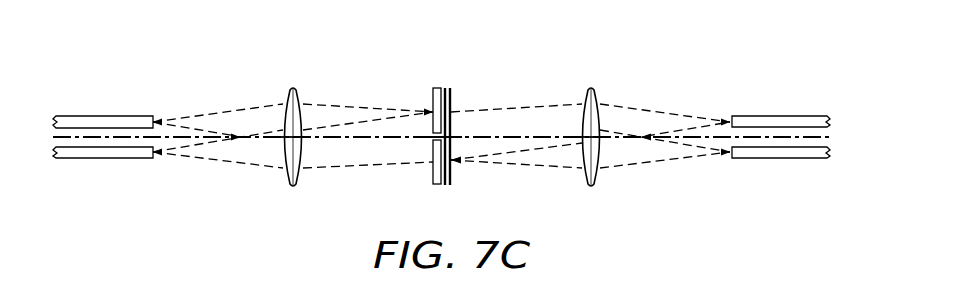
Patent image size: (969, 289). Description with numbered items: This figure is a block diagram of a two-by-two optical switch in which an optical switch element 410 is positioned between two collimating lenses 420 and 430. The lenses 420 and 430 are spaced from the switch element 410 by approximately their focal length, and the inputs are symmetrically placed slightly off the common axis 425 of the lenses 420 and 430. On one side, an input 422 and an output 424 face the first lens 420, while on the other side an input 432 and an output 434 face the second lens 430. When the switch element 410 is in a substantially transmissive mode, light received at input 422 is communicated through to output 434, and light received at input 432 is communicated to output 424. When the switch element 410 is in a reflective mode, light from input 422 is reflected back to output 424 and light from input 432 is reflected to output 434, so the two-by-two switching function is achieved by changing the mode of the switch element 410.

The optical switch element 410 is at (451, 88).
The collimating lens 420 is at (285, 176).
The axis 425 is at (488, 133).
The collimating lens 430 is at (599, 177).
The input 422 is at (90, 176).
The output 424 is at (97, 99).
The input 432 is at (828, 175).
The output 434 is at (821, 99).